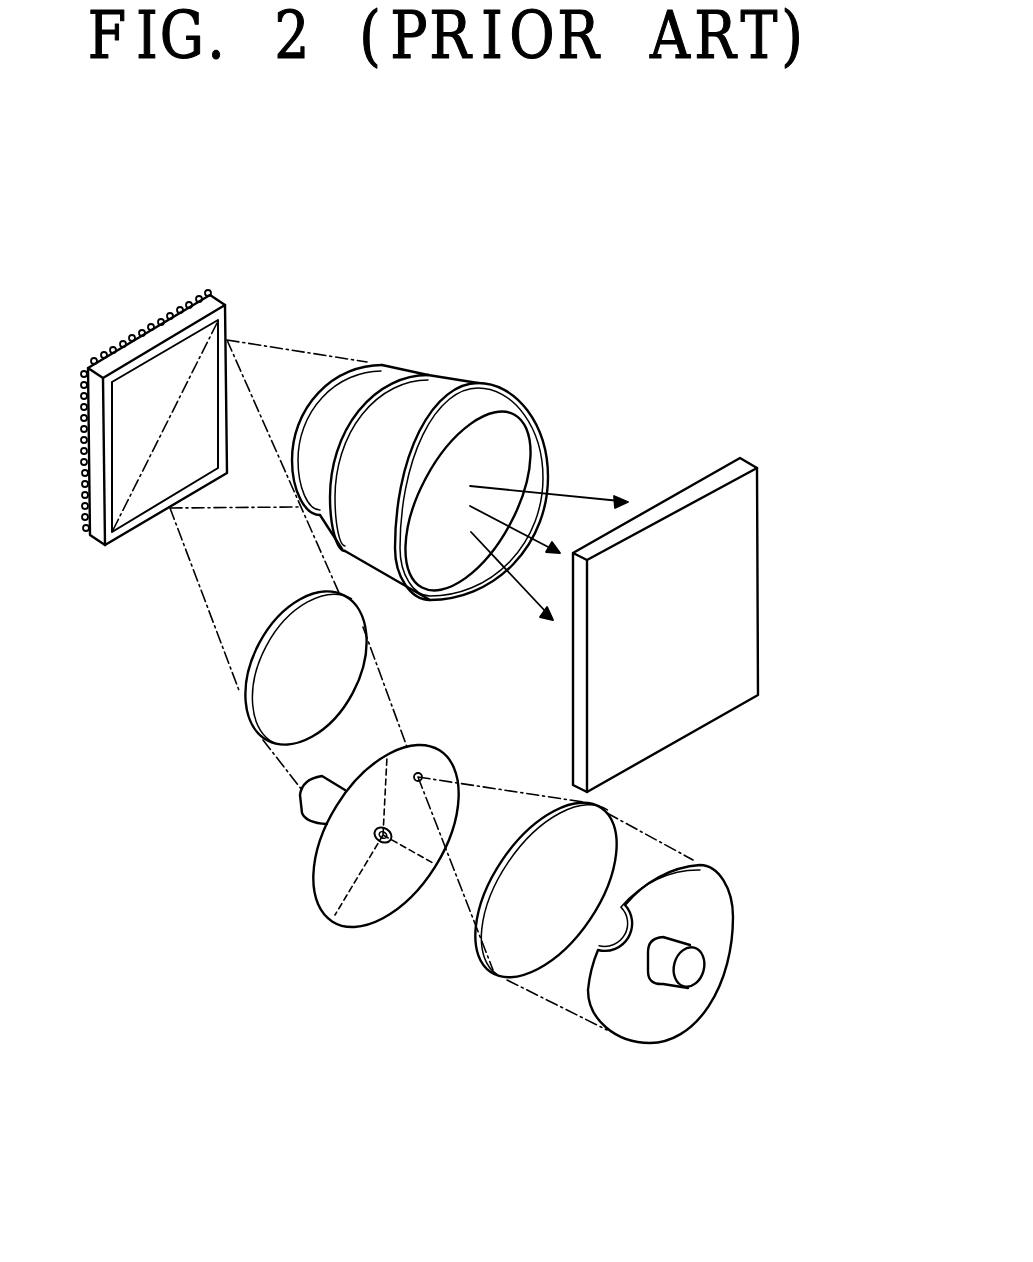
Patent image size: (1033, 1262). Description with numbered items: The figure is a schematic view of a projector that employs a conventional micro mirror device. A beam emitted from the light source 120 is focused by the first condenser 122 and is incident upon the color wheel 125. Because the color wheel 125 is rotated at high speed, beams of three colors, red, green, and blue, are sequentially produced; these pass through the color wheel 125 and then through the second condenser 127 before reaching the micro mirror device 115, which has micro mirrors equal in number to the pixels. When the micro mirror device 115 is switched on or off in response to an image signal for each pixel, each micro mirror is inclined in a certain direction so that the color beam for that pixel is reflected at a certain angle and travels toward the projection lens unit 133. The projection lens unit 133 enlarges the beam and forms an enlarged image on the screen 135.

The micro mirror device 115 is at (86, 538).
The light source 120 is at (630, 1025).
The first condenser 122 is at (500, 952).
The color wheel 125 is at (327, 895).
The second condenser 127 is at (240, 697).
The projection lens unit 133 is at (467, 397).
The screen 135 is at (730, 522).